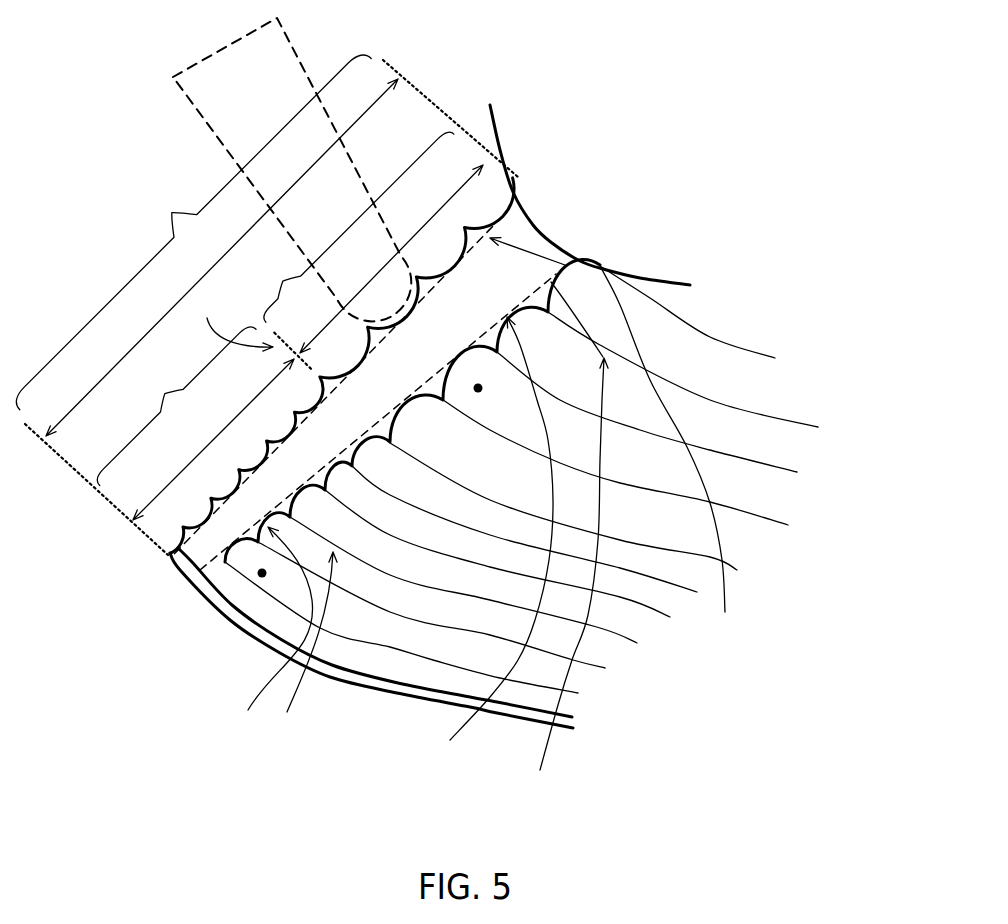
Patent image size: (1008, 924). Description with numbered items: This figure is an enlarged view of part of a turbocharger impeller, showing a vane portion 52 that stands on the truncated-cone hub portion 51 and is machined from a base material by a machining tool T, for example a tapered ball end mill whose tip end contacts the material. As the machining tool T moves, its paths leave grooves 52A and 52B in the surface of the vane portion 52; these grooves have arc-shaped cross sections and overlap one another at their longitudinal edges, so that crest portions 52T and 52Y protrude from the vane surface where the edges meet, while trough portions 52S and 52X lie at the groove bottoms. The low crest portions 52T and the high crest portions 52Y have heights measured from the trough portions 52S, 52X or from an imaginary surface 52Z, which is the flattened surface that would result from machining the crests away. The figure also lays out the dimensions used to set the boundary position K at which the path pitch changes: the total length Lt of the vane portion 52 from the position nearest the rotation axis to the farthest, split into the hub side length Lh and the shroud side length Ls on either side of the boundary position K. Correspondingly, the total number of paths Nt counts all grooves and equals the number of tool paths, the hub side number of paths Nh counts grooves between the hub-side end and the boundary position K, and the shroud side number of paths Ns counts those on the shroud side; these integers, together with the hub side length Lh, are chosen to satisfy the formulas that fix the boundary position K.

The hub portion 51 is at (537, 147).
The vane portion 52 is at (142, 588).
The groove 52A is at (262, 573).
The groove 52B is at (478, 388).
The trough portion 52S is at (255, 628).
The crest portion 52T is at (297, 647).
The trough portion 52X is at (479, 542).
The crest portion 52Y is at (561, 584).
The imaginary surface 52Z is at (617, 441).
The machining tool T is at (190, 105).
The total length Lt is at (271, 307).
The shroud side length Ls is at (223, 426).
The hub side length Lh is at (386, 259).
The total number of paths Nt is at (193, 232).
The shroud side number of paths Ns is at (176, 406).
The hub side number of paths Nh is at (351, 227).
The boundary position K is at (235, 319).